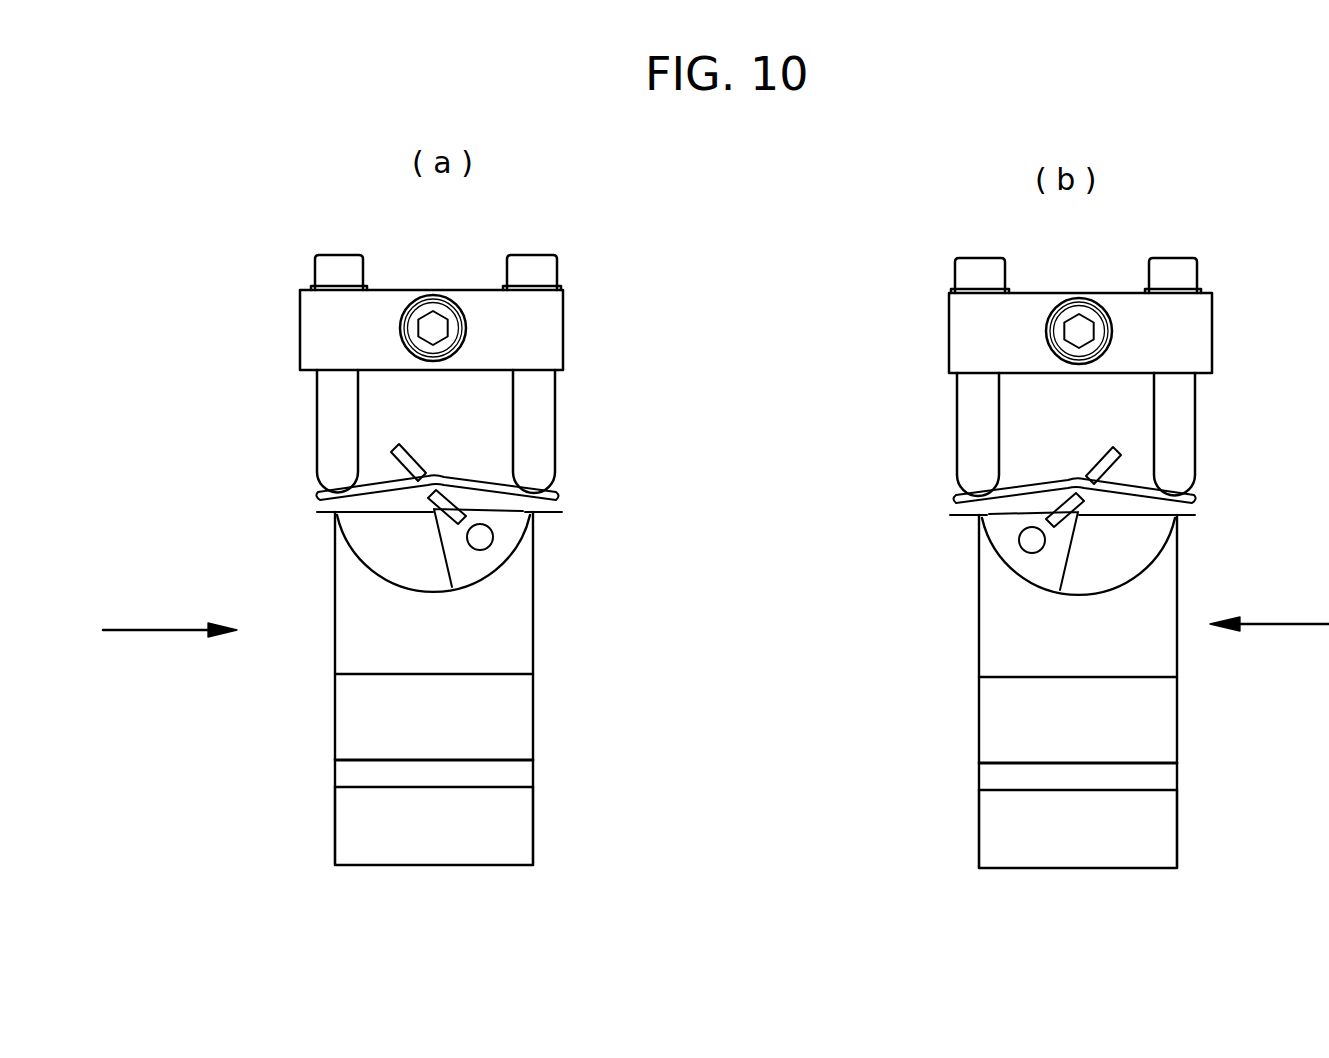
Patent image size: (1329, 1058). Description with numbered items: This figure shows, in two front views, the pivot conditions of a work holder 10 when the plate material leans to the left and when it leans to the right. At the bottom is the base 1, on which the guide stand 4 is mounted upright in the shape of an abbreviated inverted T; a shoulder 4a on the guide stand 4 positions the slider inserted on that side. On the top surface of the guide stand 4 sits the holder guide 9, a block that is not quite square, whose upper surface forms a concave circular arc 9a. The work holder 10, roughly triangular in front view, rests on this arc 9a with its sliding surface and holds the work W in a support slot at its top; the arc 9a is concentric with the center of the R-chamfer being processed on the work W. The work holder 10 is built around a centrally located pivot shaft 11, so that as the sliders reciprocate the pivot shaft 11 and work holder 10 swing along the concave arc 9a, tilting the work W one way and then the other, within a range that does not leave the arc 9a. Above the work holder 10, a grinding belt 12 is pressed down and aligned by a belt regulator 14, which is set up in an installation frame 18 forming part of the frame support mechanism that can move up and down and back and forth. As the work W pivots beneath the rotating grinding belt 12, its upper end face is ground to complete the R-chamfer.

The base 1 is at (512, 849).
The guide stand 4 is at (495, 724).
The shoulder 4a is at (368, 760).
The holder guide 9 is at (373, 639).
The concave circular arc 9a is at (392, 580).
The work holder 10 is at (507, 528).
The pivot shaft 11 is at (486, 542).
The grinding belt 12 is at (483, 490).
The belt regulator 14 is at (336, 414).
The installation frame 18 is at (327, 328).
The work W is at (397, 459).